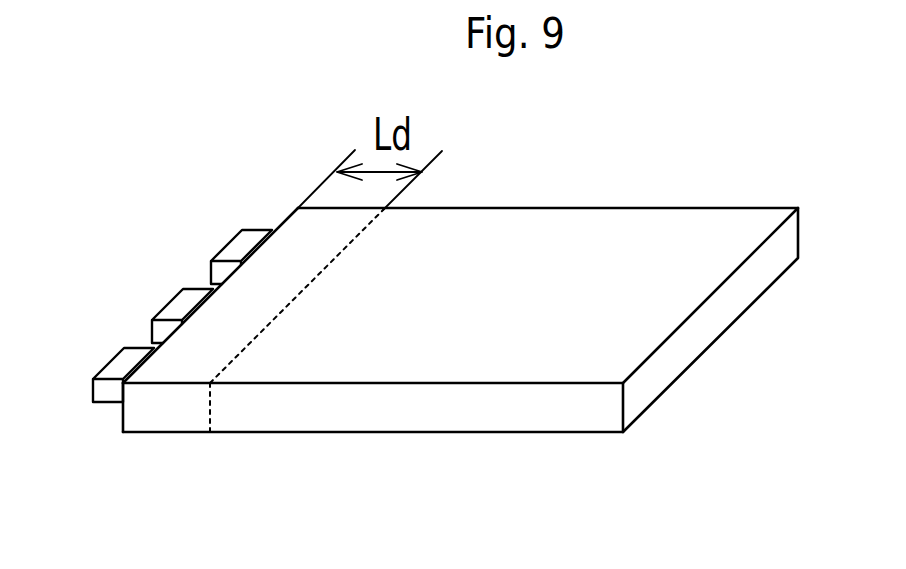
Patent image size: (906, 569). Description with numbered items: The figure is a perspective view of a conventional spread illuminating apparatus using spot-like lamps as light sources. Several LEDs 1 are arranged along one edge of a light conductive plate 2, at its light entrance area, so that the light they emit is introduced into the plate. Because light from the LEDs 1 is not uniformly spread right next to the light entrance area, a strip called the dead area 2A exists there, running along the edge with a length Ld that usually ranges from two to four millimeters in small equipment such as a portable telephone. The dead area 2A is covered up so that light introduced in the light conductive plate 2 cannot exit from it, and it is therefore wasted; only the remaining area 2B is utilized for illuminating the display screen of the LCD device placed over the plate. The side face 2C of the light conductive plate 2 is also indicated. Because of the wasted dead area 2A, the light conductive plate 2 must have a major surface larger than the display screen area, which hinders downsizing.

The LED 1 is at (232, 246).
The light conductive plate 2 is at (414, 330).
The dead area 2A is at (171, 373).
The area 2B is at (558, 338).
The side surface of plate 2C is at (121, 412).